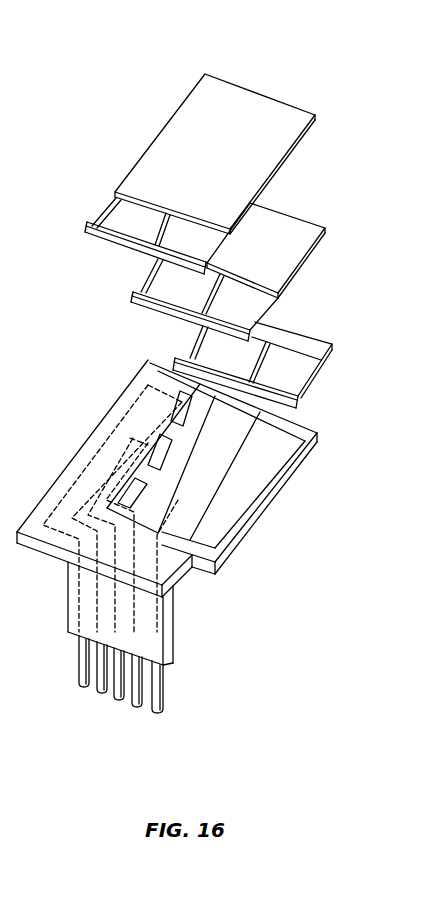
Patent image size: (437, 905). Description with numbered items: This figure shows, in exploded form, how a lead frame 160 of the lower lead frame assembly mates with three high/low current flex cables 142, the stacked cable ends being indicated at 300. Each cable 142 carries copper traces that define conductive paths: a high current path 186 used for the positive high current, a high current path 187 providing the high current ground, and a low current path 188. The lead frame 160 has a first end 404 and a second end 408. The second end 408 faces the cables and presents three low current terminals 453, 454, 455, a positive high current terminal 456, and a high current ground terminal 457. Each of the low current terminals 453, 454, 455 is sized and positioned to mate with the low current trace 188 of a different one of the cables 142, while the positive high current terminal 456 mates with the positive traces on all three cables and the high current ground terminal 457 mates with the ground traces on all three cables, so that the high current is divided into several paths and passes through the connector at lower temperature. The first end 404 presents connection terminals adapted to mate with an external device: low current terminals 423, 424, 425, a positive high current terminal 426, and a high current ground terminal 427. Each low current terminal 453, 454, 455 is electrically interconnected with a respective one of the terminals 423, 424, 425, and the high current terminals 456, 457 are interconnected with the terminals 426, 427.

The high/low current flex cable 142 is at (258, 102).
The high current conductive path 186 is at (151, 215).
The high current conductive path 187 is at (198, 235).
The low current conductive path 188 is at (104, 216).
The plate assembly 300 is at (322, 382).
The second end 408 is at (68, 402).
The high/low current lead frame 160 is at (267, 508).
The low current terminal 453 is at (172, 412).
The low current terminal 454 is at (144, 472).
The low current terminal 455 is at (118, 500).
The positive high current terminal 456 is at (218, 442).
The high current ground terminal 457 is at (220, 517).
The first end 404 is at (190, 664).
The low current terminal 423 is at (85, 688).
The low current terminal 424 is at (104, 697).
The low current terminal 425 is at (119, 702).
The positive high current terminal 426 is at (140, 712).
The high current ground terminal 427 is at (158, 717).